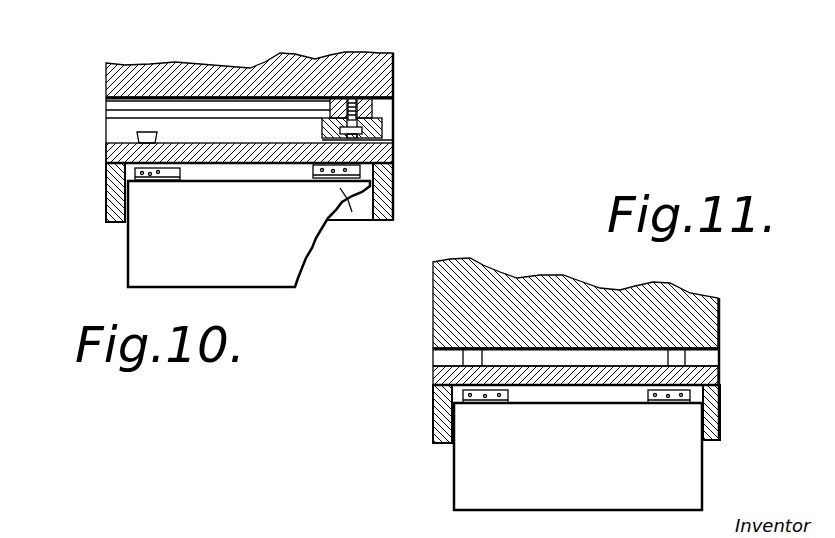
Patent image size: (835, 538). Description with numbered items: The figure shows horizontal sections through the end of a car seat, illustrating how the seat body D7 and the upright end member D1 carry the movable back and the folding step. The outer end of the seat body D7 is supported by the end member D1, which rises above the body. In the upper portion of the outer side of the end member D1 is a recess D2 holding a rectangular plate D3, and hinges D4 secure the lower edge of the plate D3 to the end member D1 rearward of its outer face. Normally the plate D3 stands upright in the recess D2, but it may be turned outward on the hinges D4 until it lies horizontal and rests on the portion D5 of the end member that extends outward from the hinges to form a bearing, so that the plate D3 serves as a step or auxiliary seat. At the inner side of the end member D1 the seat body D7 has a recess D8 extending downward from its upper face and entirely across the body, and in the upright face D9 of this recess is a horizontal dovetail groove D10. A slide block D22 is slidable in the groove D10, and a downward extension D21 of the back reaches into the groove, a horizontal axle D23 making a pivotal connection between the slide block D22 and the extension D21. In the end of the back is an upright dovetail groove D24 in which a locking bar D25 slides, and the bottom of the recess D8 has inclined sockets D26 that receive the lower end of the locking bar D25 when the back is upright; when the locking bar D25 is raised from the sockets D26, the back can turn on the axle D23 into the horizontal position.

In FIG. 10, the end member D1 is at (110, 195).
In FIG. 11, the end member D1 is at (438, 410).
In FIG. 11, the recess D2 is at (720, 407).
In FIG. 10, the rectangular plate D3 is at (249, 234).
In FIG. 11, the rectangular plate D3 is at (578, 456).
In FIG. 11, the hinges D4 is at (720, 383).
In FIG. 10, the portion of the end member D5 is at (358, 210).
In FIG. 11, the portion of the end member D5 is at (550, 390).
In FIG. 10, the seat body D7 is at (208, 78).
In FIG. 11, the seat body D7 is at (673, 303).
In FIG. 11, the recess D8 is at (430, 376).
In FIG. 10, the upright face D9 is at (132, 130).
In FIG. 10, the dovetail groove D10 is at (147, 102).
In FIG. 10, the downward extension D21 is at (390, 100).
In FIG. 10, the slide block D22 is at (332, 93).
In FIG. 10, the axle D23 is at (350, 100).
In FIG. 10, the dovetail groove D24 is at (378, 130).
In FIG. 10, the locking bar D25 is at (390, 143).
In FIG. 10, the sockets D26 is at (147, 135).
In FIG. 11, the sockets D26 is at (463, 357).